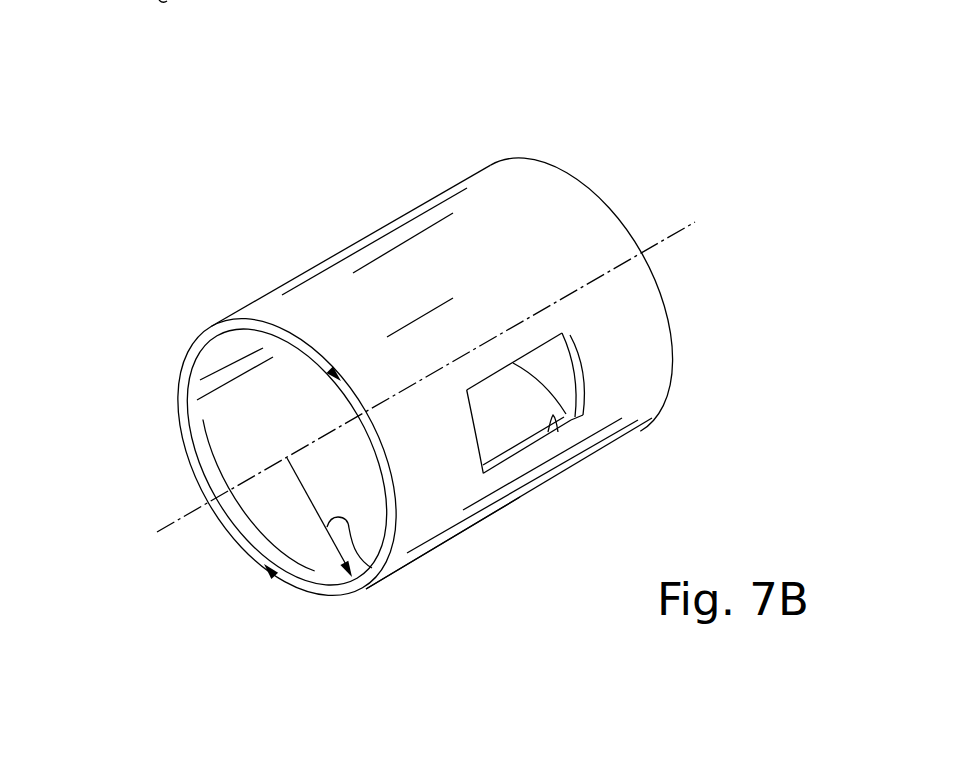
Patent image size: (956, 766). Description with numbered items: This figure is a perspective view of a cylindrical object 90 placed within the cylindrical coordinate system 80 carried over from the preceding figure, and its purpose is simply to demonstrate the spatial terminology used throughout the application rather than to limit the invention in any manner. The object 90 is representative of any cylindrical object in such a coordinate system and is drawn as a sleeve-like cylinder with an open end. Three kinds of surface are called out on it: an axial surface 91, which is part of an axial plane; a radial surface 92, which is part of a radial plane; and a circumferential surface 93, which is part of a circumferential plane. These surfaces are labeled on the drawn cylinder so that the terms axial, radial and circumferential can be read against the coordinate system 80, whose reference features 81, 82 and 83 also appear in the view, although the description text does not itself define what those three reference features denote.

The cylindrical coordinate system 80 is at (612, 169).
The longitudinal axis 81 is at (157, 532).
The bottom edge 82 is at (370, 567).
The rim 83 is at (190, 350).
The cylindrical object 90 is at (462, 151).
The axial surface 91 is at (556, 420).
The radial surface 92 is at (303, 585).
The circumferential surface 93 is at (400, 265).